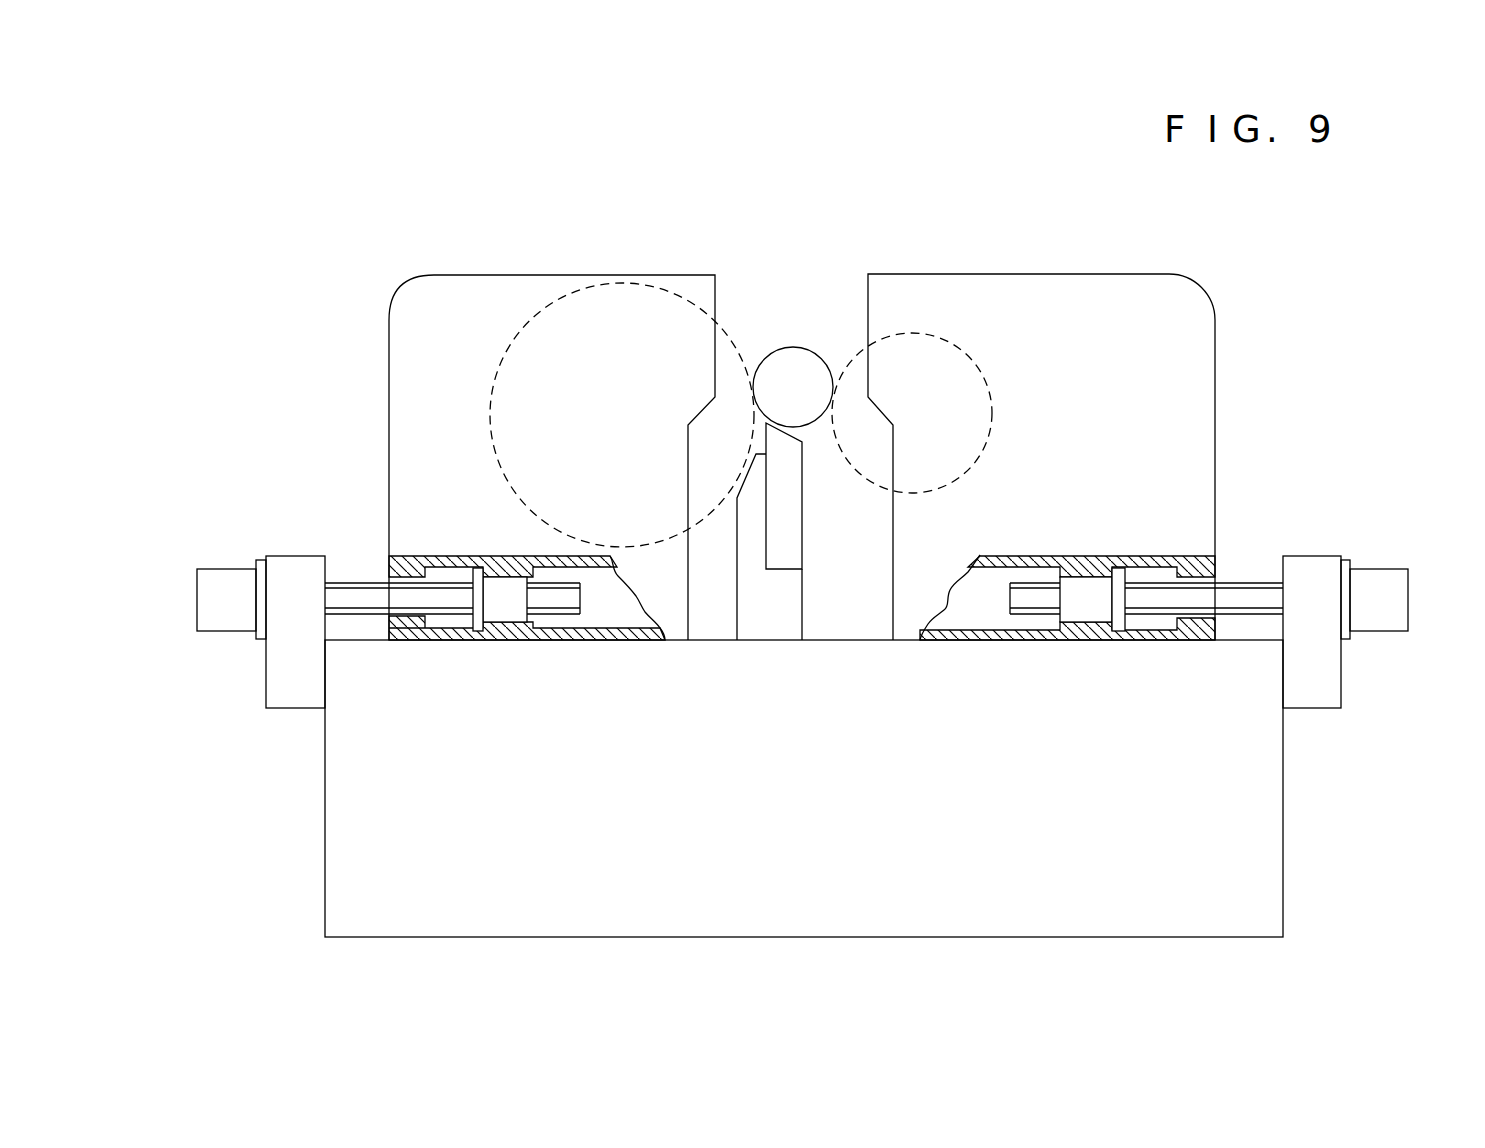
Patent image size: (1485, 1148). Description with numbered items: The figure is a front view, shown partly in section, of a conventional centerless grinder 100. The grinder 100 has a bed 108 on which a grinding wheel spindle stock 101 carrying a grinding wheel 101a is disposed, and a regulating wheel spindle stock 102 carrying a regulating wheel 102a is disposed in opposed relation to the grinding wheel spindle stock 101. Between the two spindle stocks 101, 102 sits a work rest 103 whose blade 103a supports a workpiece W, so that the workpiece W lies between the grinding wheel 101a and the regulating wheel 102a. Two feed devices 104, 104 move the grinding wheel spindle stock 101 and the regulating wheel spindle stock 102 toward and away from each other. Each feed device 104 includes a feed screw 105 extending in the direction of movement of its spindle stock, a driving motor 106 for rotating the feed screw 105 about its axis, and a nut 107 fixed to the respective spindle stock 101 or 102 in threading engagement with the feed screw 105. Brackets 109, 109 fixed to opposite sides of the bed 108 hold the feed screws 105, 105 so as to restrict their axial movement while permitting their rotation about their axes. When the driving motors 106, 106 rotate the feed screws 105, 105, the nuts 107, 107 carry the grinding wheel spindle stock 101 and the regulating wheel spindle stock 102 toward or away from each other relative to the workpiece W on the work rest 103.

The centerless grinder 100 is at (602, 223).
The grinding wheel spindle stock 101 is at (389, 378).
The grinding wheel 101a is at (728, 345).
The regulating wheel spindle stock 102 is at (1215, 378).
The regulating wheel 102a is at (853, 457).
The work rest 103 is at (770, 633).
The blade 103a is at (798, 545).
The feed device 104 is at (808, 628).
The feed screw 105 is at (358, 607).
The driving motor 106 is at (213, 570).
The nut 107 is at (506, 616).
The bed 108 is at (845, 844).
The bracket 109 is at (287, 703).
The workpiece W is at (790, 348).